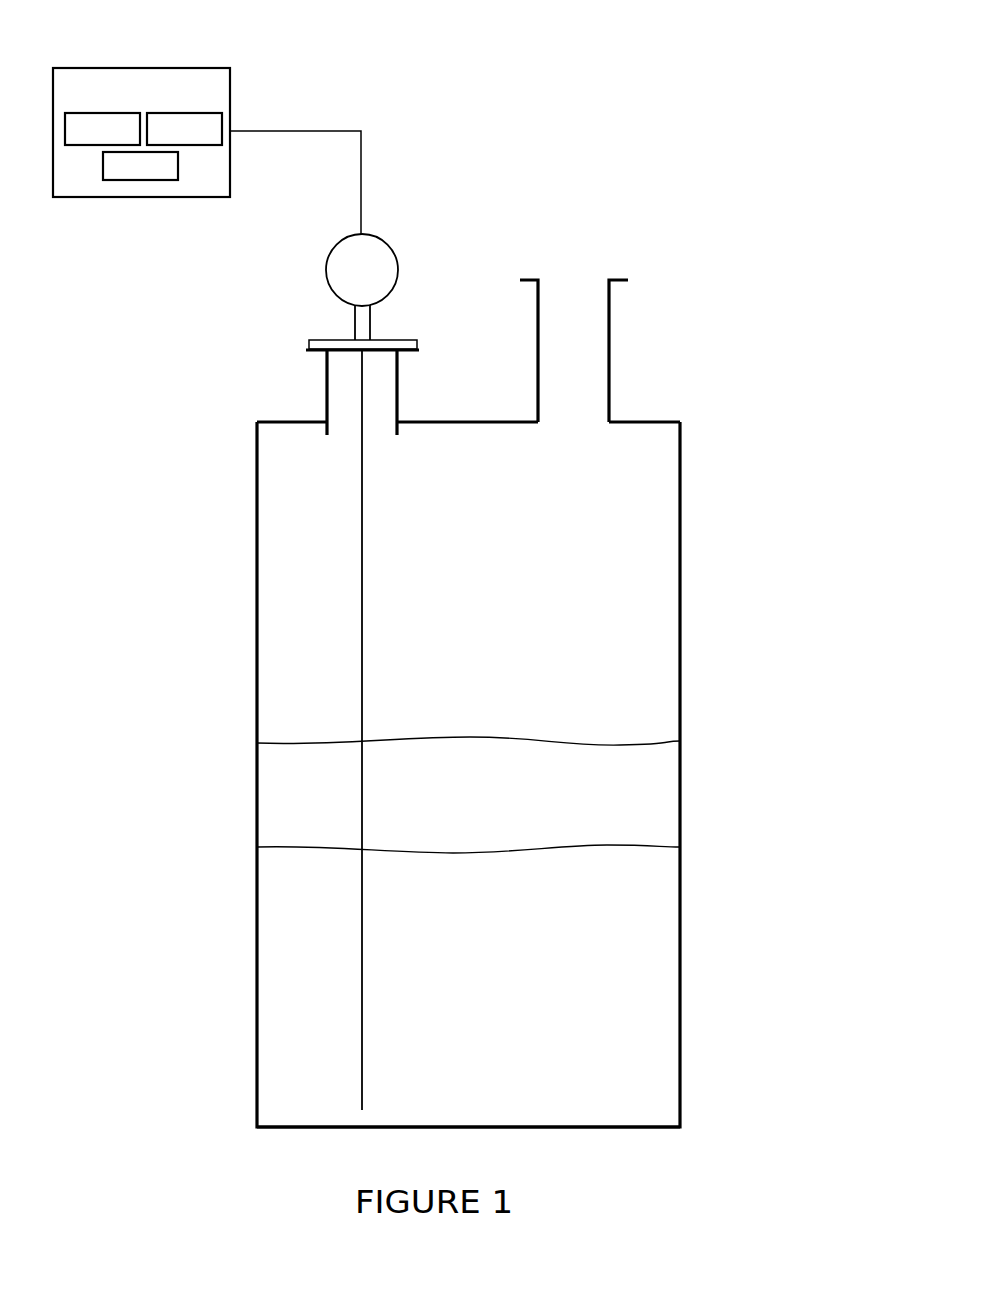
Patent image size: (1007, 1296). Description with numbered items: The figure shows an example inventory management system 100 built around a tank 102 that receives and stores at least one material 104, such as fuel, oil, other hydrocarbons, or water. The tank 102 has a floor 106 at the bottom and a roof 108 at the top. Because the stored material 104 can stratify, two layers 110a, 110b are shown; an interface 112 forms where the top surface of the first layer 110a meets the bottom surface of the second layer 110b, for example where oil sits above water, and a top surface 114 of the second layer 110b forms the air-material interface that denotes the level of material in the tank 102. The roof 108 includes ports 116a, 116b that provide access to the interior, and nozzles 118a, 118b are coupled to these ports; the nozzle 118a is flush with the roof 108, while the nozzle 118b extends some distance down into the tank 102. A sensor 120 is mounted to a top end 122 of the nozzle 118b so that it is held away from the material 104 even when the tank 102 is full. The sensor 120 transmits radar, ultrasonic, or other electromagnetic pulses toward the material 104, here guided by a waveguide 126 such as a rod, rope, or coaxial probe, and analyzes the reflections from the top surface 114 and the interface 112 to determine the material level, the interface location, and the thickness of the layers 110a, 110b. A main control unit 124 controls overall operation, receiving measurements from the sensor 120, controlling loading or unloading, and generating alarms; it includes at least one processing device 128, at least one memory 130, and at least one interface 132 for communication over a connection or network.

The inventory management system 100 is at (684, 78).
The tank 102 is at (505, 774).
The material 104 is at (536, 719).
The floor 106 is at (558, 1122).
The roof 108 is at (468, 428).
The first layer 110a is at (668, 983).
The second layer 110b is at (645, 805).
The interface 112 is at (523, 847).
The top surface 114 is at (465, 736).
The port 116a is at (563, 417).
The port 116b is at (337, 418).
The nozzle 118a is at (610, 340).
The nozzle 118b is at (399, 382).
The sensor 120 is at (398, 263).
The top end 122 is at (415, 349).
The main control unit (MCU) 124 is at (141, 113).
The waveguide 126 is at (363, 630).
The processing device 128 is at (102, 129).
The memory 130 is at (184, 129).
The interface 132 is at (140, 166).